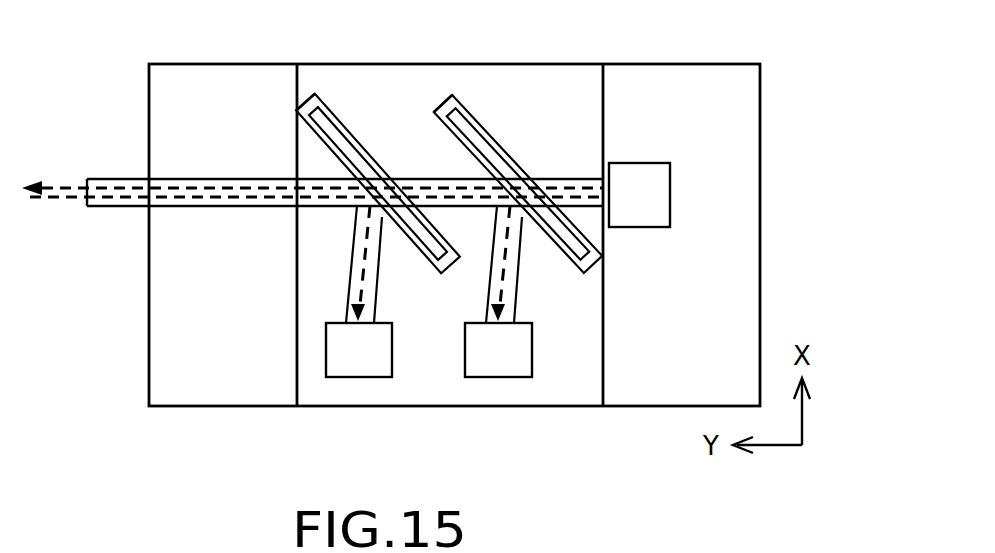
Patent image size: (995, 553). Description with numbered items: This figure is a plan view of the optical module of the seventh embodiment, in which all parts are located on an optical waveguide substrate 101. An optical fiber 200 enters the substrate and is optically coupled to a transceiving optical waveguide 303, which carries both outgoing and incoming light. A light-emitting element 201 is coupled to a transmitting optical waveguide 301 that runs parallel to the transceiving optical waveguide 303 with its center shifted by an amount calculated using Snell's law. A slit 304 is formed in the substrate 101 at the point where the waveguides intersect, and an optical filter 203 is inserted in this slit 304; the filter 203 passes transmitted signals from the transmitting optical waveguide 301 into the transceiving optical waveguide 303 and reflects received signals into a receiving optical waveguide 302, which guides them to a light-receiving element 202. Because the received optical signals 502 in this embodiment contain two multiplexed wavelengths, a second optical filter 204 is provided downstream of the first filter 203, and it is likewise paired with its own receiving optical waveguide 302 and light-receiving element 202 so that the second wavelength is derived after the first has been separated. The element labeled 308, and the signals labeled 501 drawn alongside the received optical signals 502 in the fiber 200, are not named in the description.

The optical waveguide substrate 101 is at (737, 63).
The optical fiber 200 is at (207, 158).
The light-emitting element 201 is at (640, 163).
The light-receiving element 202 is at (360, 378).
The optical filter 203 is at (350, 138).
The second optical filter 204 is at (475, 122).
The transmitting optical waveguide 301 is at (553, 182).
The receiving optical waveguide 302 is at (353, 275).
The transceiving optical waveguide 303 is at (313, 137).
The slit 304 is at (312, 93).
The end face of beam splitter 308 is at (445, 95).
The forward light beam 501 is at (312, 174).
The received optical signals 502 is at (315, 216).